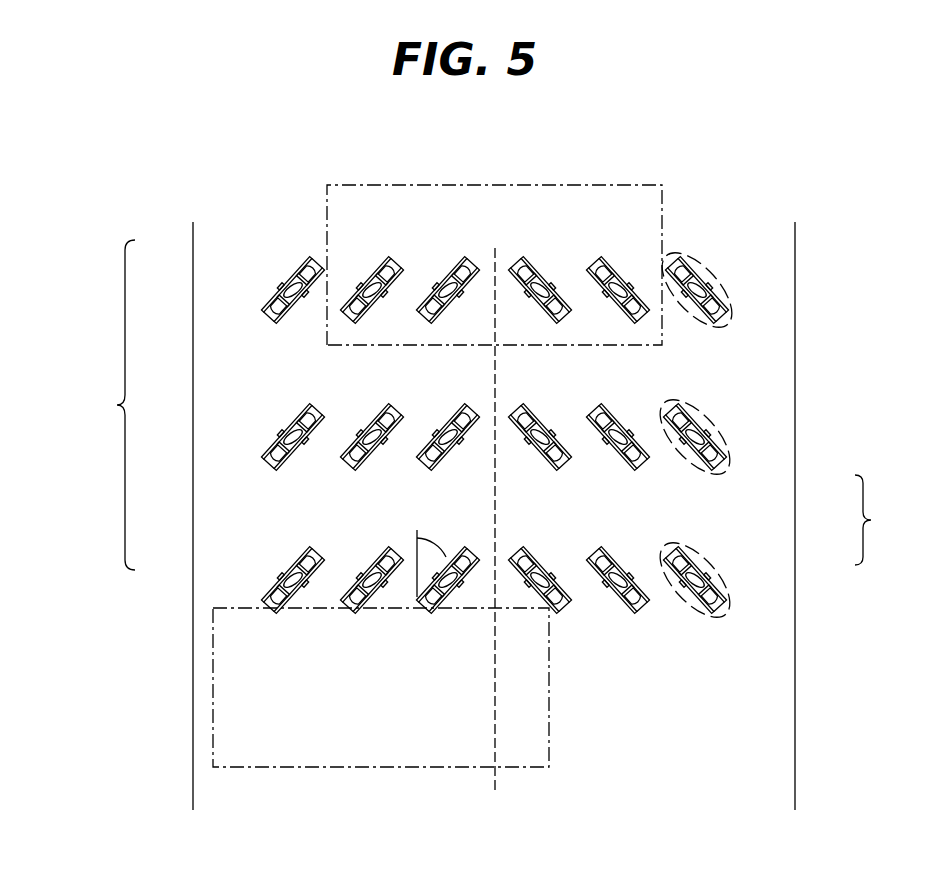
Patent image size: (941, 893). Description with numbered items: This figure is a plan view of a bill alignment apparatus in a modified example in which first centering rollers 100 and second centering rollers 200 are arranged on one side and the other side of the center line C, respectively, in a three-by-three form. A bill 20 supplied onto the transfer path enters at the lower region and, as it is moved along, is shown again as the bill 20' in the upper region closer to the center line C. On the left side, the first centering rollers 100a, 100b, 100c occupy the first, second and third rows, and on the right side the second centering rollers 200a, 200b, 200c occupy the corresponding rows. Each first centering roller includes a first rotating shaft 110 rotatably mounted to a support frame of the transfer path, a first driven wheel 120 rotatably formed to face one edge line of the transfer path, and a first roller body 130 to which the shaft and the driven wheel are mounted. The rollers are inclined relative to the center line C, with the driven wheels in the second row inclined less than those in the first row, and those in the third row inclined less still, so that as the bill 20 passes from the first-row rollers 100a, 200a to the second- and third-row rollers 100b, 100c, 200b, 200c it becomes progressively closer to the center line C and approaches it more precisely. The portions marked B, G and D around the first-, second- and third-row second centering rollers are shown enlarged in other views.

The first centering roller 100 is at (365, 450).
The first centering roller of the first row 100a is at (392, 600).
The first centering roller of the second row 100b is at (268, 435).
The first centering roller of the third row 100c is at (272, 289).
The first rotating shaft 110 is at (303, 592).
The first driven wheel 120 is at (298, 592).
The first roller body 130 is at (282, 602).
The second centering roller 200 is at (778, 447).
The second centering roller of the first row 200a is at (752, 592).
The second centering roller of the second row 200b is at (752, 461).
The second centering roller of the third row 200c is at (752, 370).
The bill 20 is at (407, 687).
The bill 20' is at (469, 265).
The center line C is at (494, 510).
The portion D is at (708, 318).
The portion G is at (706, 465).
The portion B is at (706, 610).